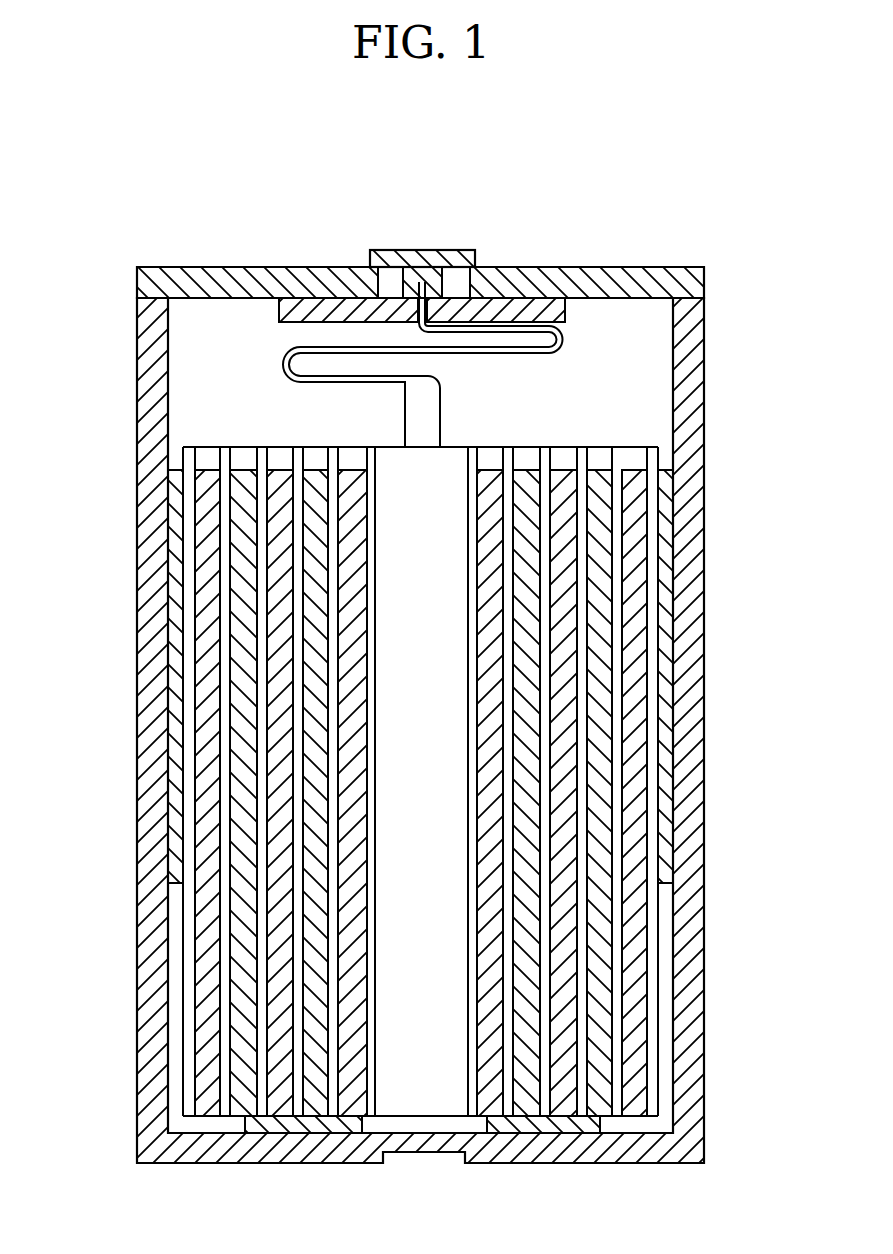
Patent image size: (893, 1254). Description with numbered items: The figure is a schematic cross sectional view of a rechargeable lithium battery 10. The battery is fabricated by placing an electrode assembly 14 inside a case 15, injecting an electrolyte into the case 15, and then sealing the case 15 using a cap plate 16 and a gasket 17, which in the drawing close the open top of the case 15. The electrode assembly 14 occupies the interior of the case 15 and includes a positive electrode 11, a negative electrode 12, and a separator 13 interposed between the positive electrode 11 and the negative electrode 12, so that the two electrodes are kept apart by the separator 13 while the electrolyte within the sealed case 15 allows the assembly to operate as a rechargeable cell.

The rechargeable lithium battery 10 is at (436, 163).
The positive electrode 11 is at (637, 1017).
The negative electrode 12 is at (237, 1010).
The separator 13 is at (222, 1082).
The electrode assembly 14 is at (420, 707).
The case 15 is at (152, 405).
The cap plate 16 is at (536, 281).
The gasket 17 is at (373, 250).